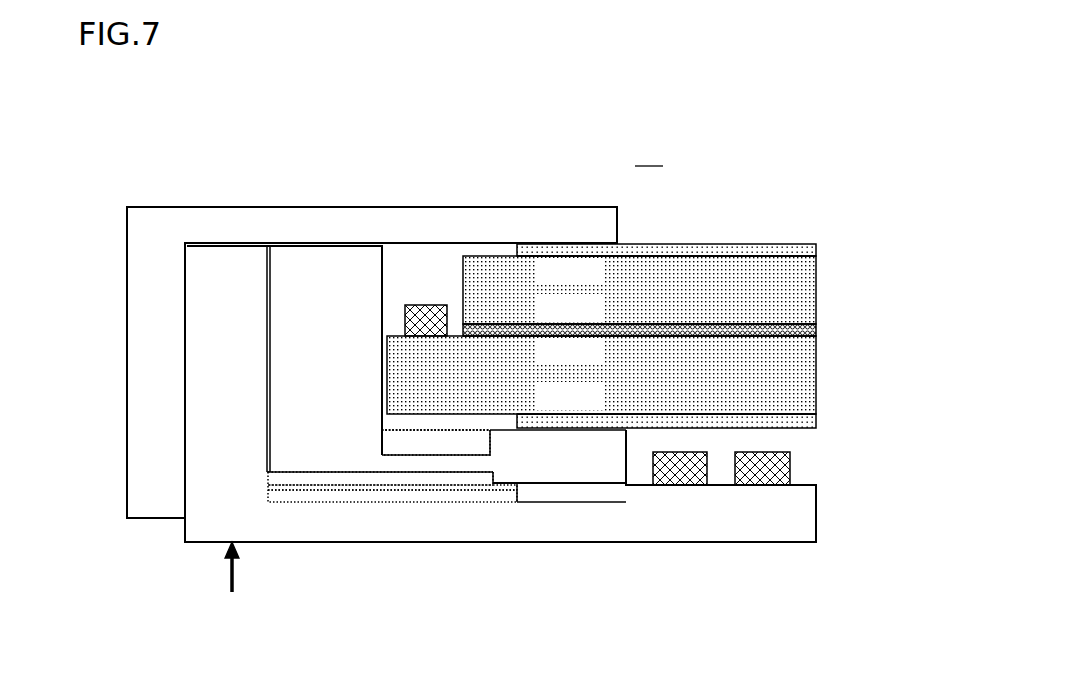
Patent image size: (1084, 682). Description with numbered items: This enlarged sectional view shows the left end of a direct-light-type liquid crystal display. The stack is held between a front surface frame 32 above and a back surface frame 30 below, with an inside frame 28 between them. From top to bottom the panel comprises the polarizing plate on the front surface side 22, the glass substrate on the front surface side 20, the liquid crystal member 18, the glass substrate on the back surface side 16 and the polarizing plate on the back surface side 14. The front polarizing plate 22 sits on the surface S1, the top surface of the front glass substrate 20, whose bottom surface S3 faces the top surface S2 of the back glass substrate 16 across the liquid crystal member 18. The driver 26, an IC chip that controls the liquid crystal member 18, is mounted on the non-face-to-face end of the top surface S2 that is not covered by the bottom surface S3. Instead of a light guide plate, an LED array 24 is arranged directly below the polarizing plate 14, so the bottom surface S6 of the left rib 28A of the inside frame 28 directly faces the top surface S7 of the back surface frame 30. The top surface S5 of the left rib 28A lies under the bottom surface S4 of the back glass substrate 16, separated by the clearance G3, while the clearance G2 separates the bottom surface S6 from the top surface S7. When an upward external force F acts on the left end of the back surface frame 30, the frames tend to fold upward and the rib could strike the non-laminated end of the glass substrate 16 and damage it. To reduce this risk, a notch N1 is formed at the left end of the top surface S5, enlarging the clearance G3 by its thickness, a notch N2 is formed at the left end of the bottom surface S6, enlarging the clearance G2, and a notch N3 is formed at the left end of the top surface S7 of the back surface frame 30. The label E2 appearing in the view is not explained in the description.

The front surface frame 32 is at (220, 207).
The back surface frame 30 is at (283, 542).
The inside frame 28 is at (320, 243).
The left rib 28A is at (617, 458).
The driver (IC chip) 26 is at (424, 305).
The LED 24 is at (677, 485).
The polarizing plate on the front surface side 22 is at (817, 248).
The glass substrate on the front surface side 20 is at (817, 297).
The liquid crystal member 18 is at (817, 327).
The glass substrate on the back surface side 16 is at (817, 373).
The polarizing plate on the back surface side 14 is at (817, 418).
The clearance G3 is at (408, 440).
The clearance G2 is at (298, 493).
The notch N2 is at (318, 470).
The notch N3 is at (405, 503).
The notch N1 is at (486, 438).
The first surface S1 is at (545, 262).
The second surface S2 is at (545, 343).
The third surface S3 is at (543, 315).
The bottom surface of the glass substrate S4 is at (543, 403).
The top surface of the left rib S5 is at (550, 436).
The bottom surface of the inside frame S6 is at (548, 475).
The top surface of the back surface frame S7 is at (550, 496).
The element E2 is at (648, 154).
The upward external force F is at (232, 582).